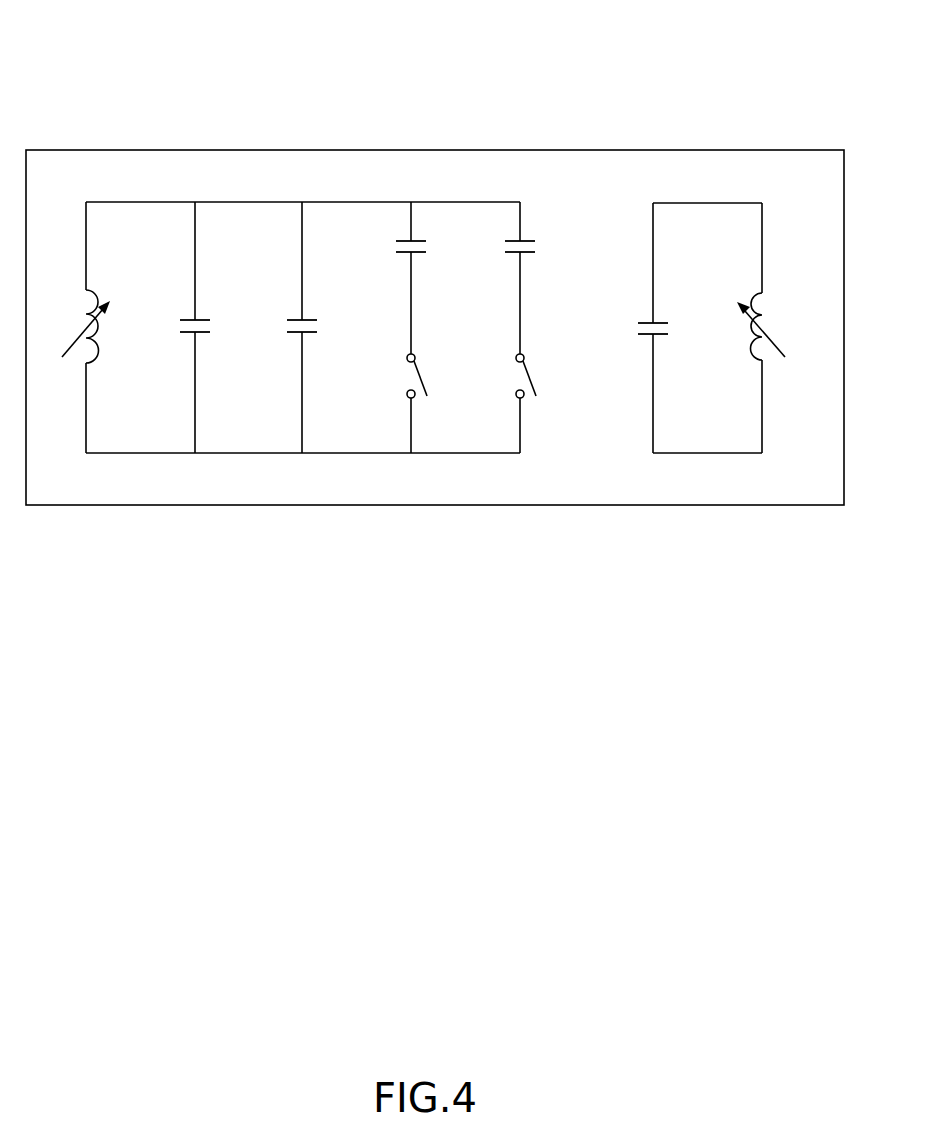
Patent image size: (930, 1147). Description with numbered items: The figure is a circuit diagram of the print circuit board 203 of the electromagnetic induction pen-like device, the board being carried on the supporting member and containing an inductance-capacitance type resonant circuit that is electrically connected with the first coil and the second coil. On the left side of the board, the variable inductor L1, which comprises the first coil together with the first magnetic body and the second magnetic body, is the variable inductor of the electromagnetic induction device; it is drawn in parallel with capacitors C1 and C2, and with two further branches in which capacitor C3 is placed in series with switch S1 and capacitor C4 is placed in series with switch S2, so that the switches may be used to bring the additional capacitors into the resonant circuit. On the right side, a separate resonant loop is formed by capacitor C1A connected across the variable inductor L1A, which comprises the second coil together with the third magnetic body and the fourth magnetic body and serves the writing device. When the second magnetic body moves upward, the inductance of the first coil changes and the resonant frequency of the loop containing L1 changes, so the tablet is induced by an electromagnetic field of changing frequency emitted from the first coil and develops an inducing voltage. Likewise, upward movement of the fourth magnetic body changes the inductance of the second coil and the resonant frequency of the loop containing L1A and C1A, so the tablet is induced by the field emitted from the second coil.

The print circuit board 203 is at (737, 93).
The variable inductor of the electromagnetic induction device L1 is at (81, 327).
The capacitor C1 is at (169, 327).
The capacitor C2 is at (277, 327).
The capacitor C3 is at (385, 278).
The capacitor C4 is at (494, 278).
The switch S1 is at (386, 390).
The switch S2 is at (494, 390).
The capacitor C1A is at (692, 328).
The variable inductor of the writing device L1A is at (781, 328).